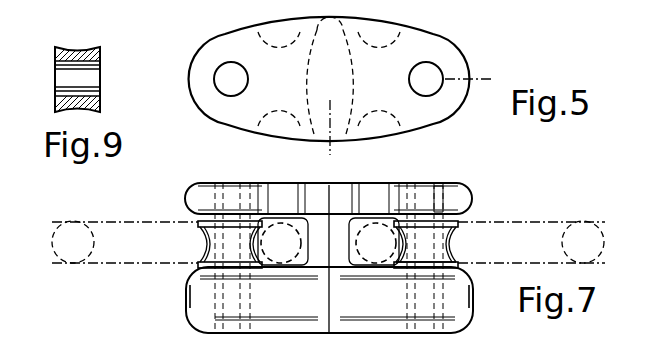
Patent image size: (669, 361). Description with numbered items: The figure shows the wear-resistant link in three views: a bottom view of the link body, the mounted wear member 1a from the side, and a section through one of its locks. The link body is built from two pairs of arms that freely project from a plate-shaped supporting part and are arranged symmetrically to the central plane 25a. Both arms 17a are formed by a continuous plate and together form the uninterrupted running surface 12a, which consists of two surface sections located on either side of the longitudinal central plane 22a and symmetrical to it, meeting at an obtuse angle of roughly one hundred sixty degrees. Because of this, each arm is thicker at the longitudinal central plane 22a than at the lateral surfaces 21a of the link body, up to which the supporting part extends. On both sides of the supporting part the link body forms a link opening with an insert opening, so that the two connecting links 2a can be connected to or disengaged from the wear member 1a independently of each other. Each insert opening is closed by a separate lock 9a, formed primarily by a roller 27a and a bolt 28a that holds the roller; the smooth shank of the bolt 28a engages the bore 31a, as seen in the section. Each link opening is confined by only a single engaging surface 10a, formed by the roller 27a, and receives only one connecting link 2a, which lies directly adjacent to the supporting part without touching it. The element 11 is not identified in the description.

In FIG. 5, the link plate 11 is at (329, 70).
In FIG. 5, the lateral surfaces 21a is at (272, 30).
In FIG. 5, the running surface 12a is at (426, 63).
In FIG. 5, the arms 17a is at (392, 23).
In FIG. 5, the longitudinal central plane 22a is at (482, 77).
In FIG. 5, the central plane 25a is at (331, 148).
In FIG. 9, the roller 27a is at (98, 51).
In FIG. 7, the roller 27a is at (397, 266).
In FIG. 9, the bore 31a is at (92, 78).
In FIG. 7, the wear member 1a is at (460, 183).
In FIG. 7, the connecting links 2a is at (157, 212).
In FIG. 7, the lock 9a is at (197, 243).
In FIG. 7, the engaging surface 10a is at (328, 241).
In FIG. 7, the bolt 28a is at (440, 193).